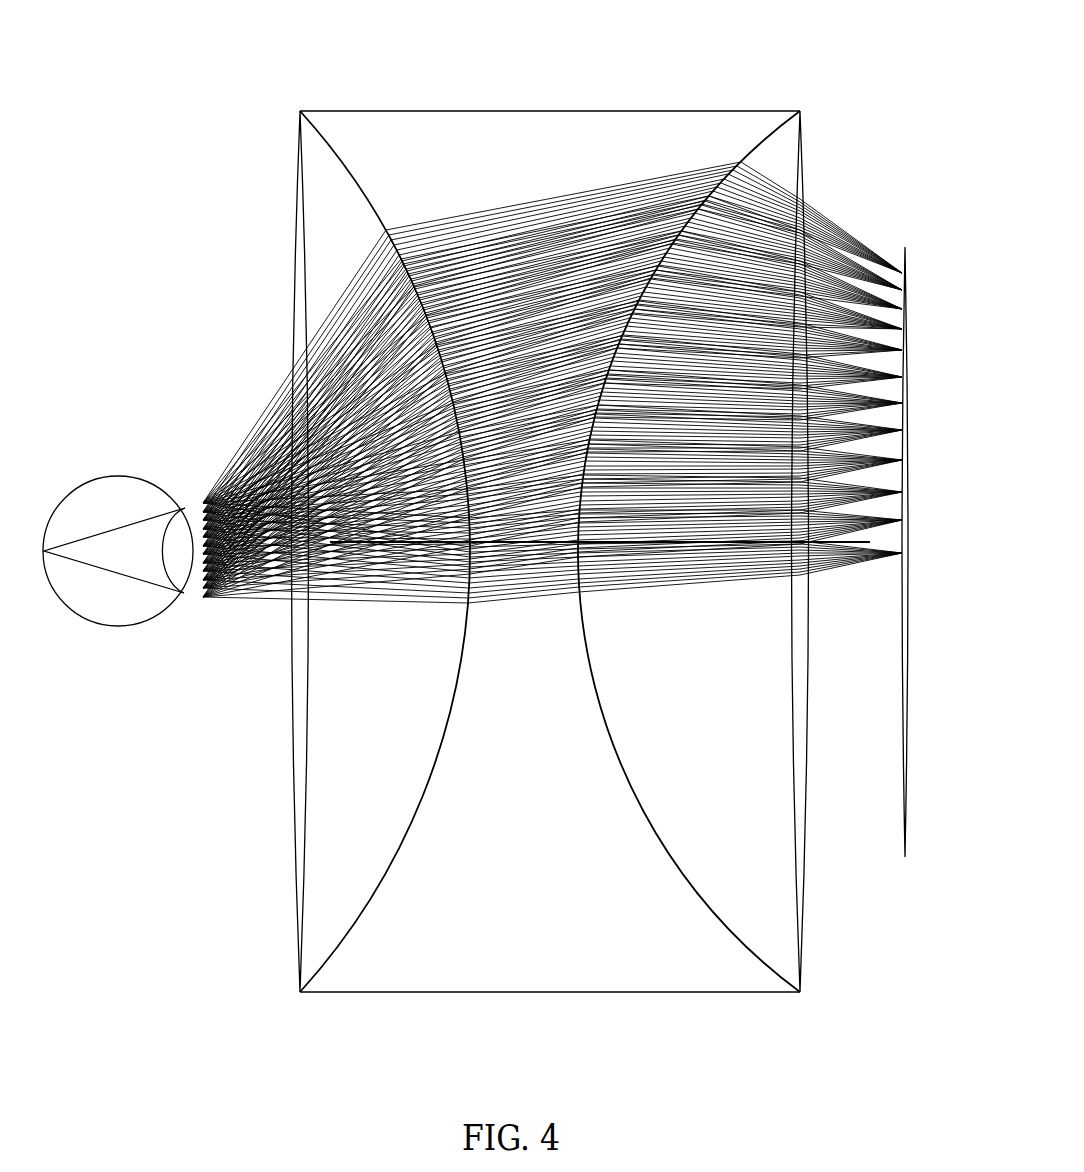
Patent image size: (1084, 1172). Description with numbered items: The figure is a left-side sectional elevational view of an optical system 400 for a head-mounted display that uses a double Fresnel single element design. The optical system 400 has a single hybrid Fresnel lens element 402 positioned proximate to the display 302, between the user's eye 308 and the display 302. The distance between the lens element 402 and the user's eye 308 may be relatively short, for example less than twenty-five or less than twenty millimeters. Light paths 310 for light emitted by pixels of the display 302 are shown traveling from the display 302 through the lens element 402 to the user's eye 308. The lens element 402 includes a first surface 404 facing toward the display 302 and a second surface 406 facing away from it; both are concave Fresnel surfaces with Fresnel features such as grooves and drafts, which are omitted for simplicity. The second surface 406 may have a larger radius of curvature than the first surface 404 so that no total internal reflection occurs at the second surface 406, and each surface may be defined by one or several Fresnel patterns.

The optical system 400 is at (820, 70).
The hybrid Fresnel lens element 402 is at (581, 110).
The first surface 404 is at (694, 887).
The second surface 406 is at (388, 863).
The display 302 is at (908, 745).
The user's eye 308 is at (103, 477).
The light paths 310 is at (842, 235).